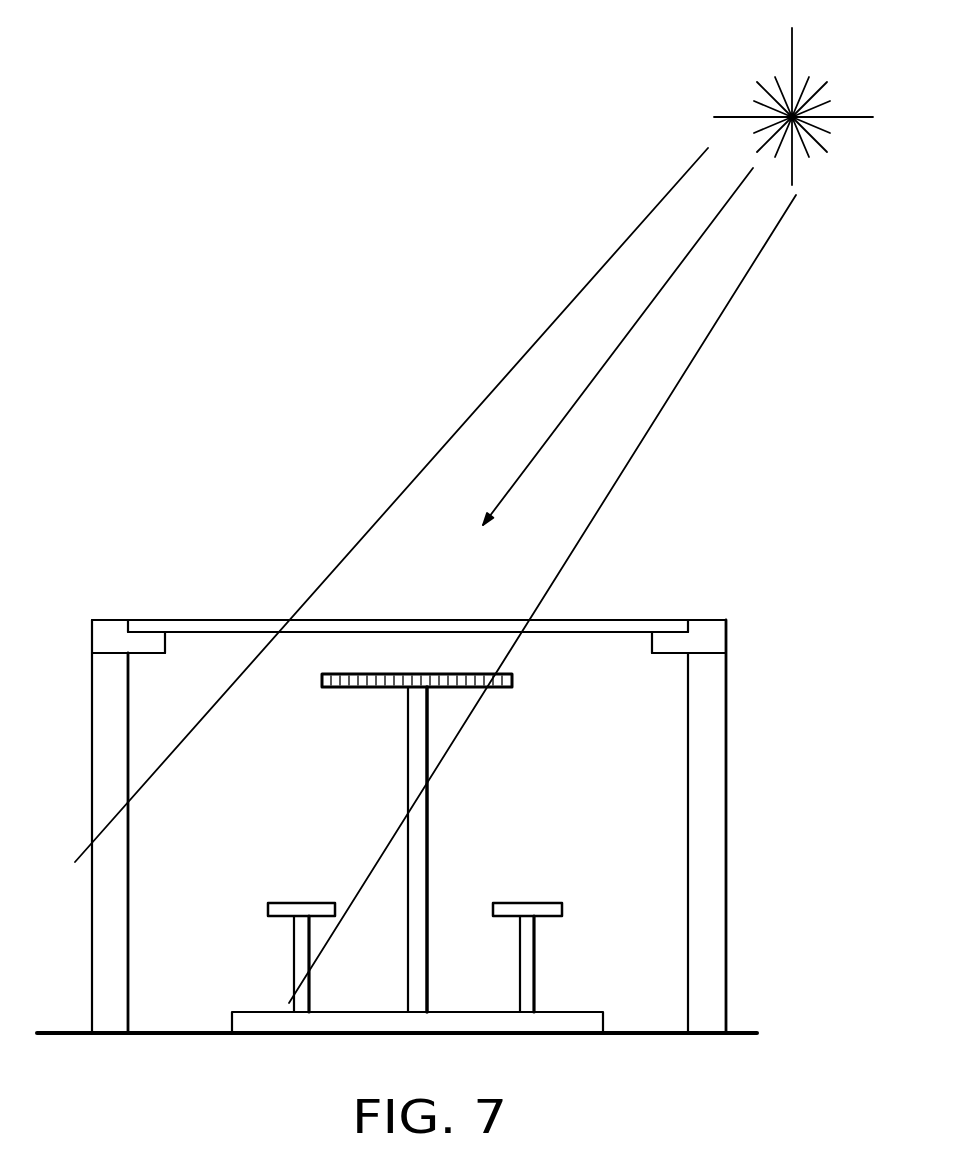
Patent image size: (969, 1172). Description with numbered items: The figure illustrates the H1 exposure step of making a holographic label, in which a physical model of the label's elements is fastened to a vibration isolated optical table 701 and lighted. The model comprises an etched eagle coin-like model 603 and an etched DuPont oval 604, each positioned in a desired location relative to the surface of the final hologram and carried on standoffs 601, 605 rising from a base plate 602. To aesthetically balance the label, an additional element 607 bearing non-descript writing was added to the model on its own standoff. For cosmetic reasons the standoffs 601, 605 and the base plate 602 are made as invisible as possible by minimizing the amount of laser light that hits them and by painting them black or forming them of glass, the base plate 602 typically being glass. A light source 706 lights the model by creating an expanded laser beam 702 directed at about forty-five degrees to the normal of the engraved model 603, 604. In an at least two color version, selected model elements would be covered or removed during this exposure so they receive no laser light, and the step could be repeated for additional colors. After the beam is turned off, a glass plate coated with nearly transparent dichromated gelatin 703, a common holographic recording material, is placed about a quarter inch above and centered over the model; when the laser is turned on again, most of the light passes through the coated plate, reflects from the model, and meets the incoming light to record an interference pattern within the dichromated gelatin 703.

The light source 706 is at (733, 117).
The expanded laser beam 702 is at (568, 408).
The dichromated gelatin 703 is at (640, 618).
The vibration isolated optical table 701 is at (742, 1032).
The base plate 602 is at (588, 1010).
The standoff 601 is at (408, 783).
The etched eagle coin-like model 603 is at (355, 689).
The etched DuPont oval 604 is at (297, 902).
The standoff 605 is at (293, 957).
The element with non-descript writing 607 is at (542, 902).